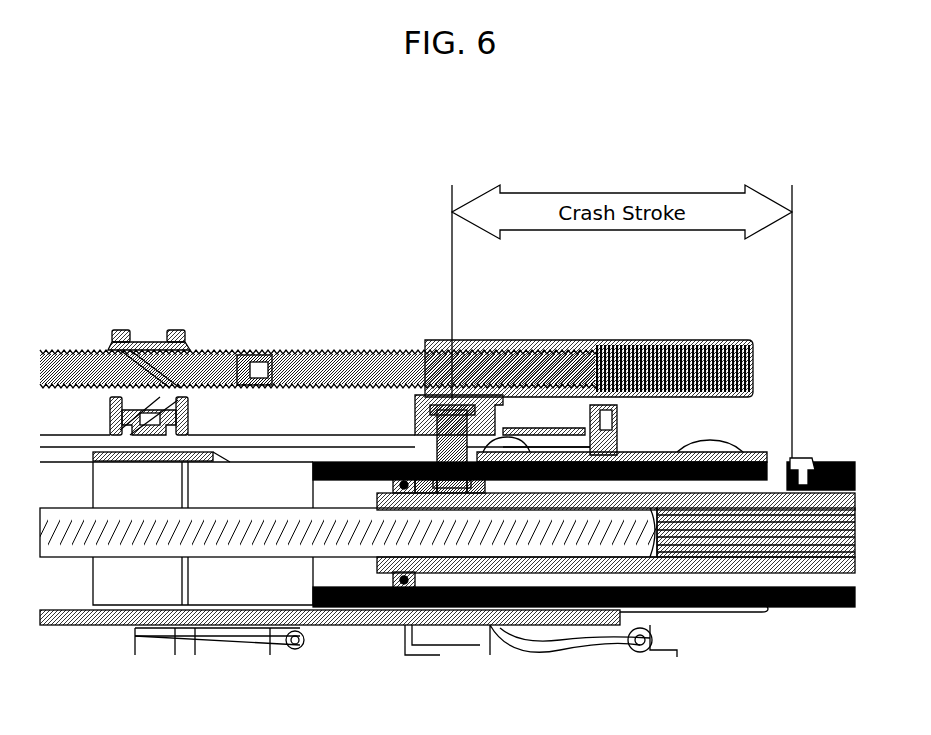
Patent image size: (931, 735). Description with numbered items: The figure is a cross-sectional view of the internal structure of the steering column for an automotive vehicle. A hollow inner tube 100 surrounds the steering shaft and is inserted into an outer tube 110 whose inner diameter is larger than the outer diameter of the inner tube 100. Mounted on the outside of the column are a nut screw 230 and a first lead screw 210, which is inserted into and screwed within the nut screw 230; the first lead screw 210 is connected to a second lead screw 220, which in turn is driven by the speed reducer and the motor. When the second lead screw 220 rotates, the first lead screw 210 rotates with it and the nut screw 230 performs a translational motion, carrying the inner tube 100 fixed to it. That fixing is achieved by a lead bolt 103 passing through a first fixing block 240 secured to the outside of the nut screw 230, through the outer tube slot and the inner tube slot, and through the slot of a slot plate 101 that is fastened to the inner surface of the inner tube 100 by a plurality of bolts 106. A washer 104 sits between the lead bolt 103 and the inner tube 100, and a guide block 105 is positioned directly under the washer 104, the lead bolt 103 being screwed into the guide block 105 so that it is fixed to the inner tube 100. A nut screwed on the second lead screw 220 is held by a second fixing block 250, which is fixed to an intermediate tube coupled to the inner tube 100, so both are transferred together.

The inner tube 100 is at (825, 462).
The slot plate 101 is at (697, 505).
The lead bolt 103 is at (427, 340).
The washer 104 is at (397, 589).
The guide block 105 is at (455, 500).
The bolts 106 is at (807, 490).
The outer tube 110 is at (88, 627).
The first lead screw 210 is at (294, 346).
The second lead screw 220 is at (80, 352).
The nut screw 230 is at (640, 340).
The first fixing block 240 is at (412, 422).
The second fixing block 250 is at (188, 420).